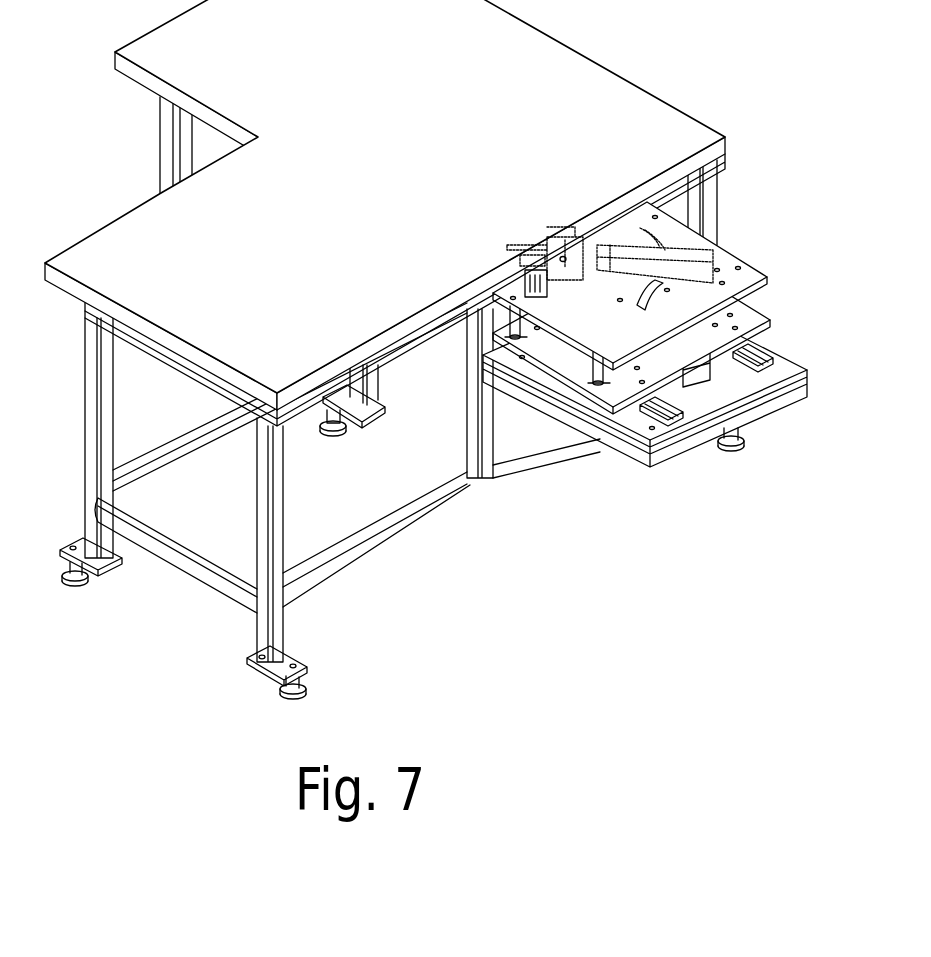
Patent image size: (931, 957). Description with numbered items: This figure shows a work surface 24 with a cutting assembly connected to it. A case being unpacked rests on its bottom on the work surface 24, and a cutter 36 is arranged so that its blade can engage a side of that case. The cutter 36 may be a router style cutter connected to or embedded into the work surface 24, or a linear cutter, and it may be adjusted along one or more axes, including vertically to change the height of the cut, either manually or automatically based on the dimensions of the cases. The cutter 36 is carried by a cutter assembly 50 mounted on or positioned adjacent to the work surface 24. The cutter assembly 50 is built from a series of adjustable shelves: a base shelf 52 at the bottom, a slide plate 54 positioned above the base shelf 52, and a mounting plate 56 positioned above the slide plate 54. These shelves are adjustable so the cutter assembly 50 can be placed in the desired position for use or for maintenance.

The work surface 24 is at (383, 34).
The cutter assembly 50 is at (656, 290).
The base shelf 52 is at (787, 383).
The slide plate 54 is at (753, 313).
The mounting plate 56 is at (751, 271).
The cutter 36 is at (562, 255).